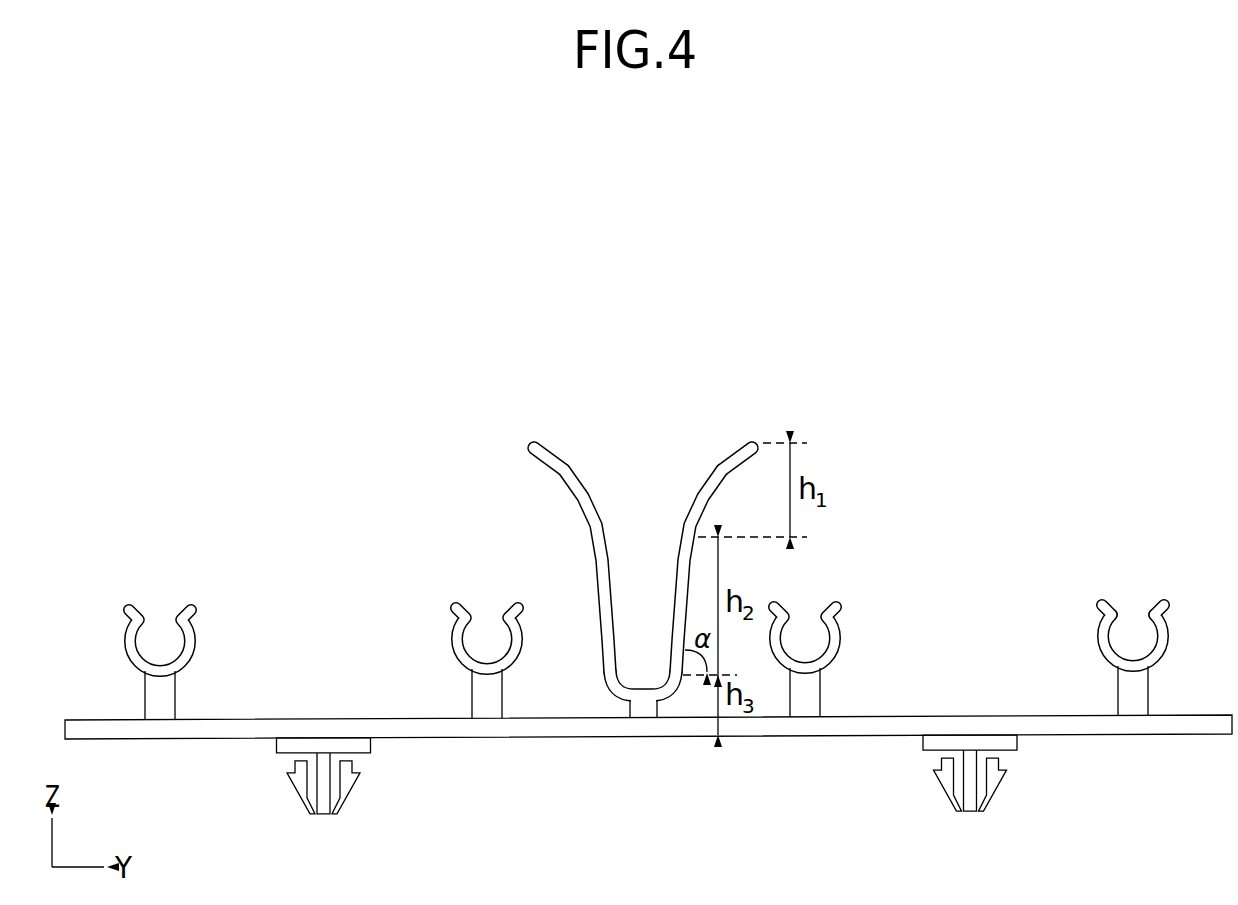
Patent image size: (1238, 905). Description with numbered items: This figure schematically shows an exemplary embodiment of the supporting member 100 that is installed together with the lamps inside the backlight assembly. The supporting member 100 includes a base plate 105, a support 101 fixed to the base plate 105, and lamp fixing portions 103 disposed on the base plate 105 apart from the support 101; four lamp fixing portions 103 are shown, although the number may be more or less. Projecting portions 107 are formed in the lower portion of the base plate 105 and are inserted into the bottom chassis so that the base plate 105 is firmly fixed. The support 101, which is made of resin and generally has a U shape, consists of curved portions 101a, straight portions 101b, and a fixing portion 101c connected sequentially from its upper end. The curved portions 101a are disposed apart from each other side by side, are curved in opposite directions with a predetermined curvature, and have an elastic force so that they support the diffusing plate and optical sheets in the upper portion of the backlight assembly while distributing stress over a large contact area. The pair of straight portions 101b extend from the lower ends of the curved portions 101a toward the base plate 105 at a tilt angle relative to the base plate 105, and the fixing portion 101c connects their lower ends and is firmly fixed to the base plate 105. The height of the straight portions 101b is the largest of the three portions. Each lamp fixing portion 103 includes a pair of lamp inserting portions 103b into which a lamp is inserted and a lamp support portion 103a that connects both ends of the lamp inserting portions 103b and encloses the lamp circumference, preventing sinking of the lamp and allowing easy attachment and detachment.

The supporting member 100 is at (677, 318).
The support 101 is at (627, 587).
The curved portions 101a is at (567, 472).
The straight portions 101b is at (685, 562).
The fixing portion 101c is at (647, 708).
The lamp fixing portion 103 is at (1160, 595).
The lamp support portion 103a is at (1168, 639).
The lamp inserting portions 103b is at (1158, 606).
The base plate 105 is at (1183, 727).
The projecting portion 107 is at (997, 790).